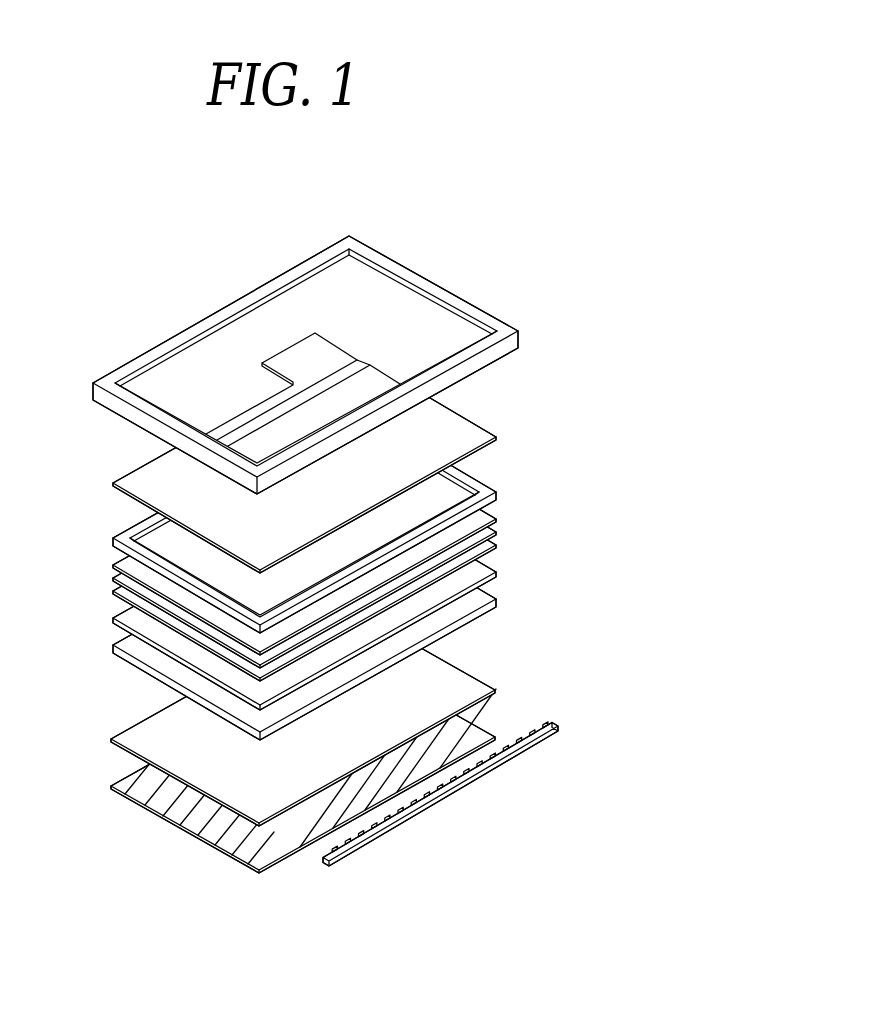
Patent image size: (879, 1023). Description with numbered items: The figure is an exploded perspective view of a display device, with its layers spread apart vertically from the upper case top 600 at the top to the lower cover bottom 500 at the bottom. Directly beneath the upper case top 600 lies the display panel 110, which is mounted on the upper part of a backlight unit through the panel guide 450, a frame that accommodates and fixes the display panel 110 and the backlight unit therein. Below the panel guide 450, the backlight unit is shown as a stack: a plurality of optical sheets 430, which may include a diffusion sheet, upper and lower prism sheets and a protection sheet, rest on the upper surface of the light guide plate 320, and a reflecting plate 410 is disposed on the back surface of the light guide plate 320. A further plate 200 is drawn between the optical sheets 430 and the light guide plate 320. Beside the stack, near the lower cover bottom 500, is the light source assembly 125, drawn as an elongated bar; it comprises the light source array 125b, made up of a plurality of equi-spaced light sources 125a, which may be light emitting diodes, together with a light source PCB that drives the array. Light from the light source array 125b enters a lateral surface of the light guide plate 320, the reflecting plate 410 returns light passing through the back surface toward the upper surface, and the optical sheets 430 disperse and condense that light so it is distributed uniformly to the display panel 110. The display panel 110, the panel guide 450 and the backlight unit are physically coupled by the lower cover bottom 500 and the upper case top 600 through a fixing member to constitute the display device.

The upper case top 600 is at (97, 393).
The display panel 110 is at (160, 495).
The panel guide 450 is at (113, 543).
The optical sheets 430 is at (98, 588).
The light guide plate 200 is at (140, 627).
The light guide plate 320 is at (133, 650).
The reflecting plate 410 is at (240, 797).
The lower cover bottom 500 is at (152, 793).
The light source assembly 125 is at (440, 802).
The light sources 125a is at (352, 851).
The light source array 125b is at (472, 842).